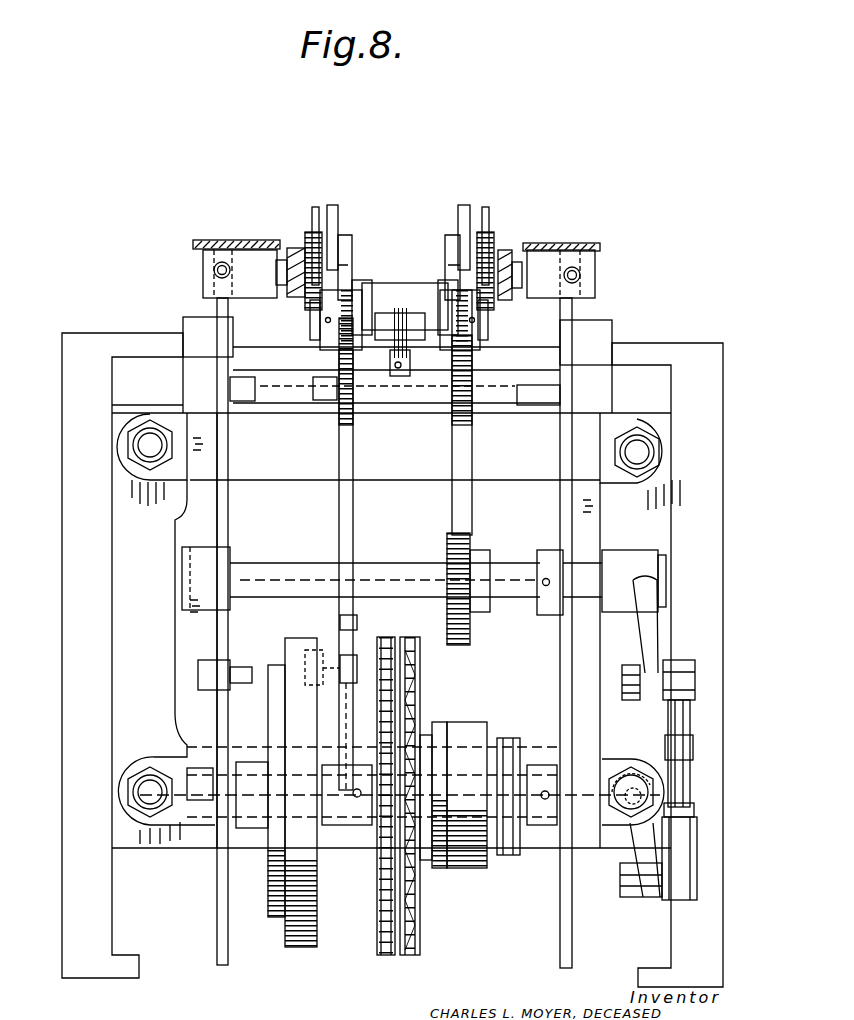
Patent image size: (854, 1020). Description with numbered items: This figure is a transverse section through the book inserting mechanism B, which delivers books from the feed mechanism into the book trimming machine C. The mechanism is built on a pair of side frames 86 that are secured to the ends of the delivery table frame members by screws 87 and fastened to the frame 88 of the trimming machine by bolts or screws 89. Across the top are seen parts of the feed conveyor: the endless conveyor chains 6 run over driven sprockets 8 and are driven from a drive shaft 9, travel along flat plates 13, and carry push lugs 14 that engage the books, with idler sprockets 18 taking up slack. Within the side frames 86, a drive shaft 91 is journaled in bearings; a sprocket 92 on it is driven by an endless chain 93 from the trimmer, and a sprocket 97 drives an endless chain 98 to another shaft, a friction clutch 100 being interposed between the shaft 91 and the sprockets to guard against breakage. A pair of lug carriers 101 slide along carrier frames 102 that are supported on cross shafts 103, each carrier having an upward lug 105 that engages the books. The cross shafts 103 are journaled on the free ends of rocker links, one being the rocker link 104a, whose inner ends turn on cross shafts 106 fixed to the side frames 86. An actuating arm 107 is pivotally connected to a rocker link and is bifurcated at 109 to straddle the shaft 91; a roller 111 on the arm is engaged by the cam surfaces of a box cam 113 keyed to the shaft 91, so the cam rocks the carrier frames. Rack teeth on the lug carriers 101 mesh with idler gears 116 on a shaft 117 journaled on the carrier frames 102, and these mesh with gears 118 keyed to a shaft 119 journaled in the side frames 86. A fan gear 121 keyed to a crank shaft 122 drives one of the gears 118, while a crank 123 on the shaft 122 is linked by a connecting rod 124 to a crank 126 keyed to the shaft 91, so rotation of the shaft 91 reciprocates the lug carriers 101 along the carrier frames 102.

The endless conveyor chains 6 is at (305, 238).
The driven sprockets 8 is at (495, 255).
The drive shaft 9 is at (322, 200).
The flat plates 13 is at (578, 248).
The push lugs 14 is at (313, 208).
The idler sprockets 18 is at (298, 248).
The side frames 86 is at (200, 528).
The screws 87 is at (215, 272).
The frame 88 is at (73, 620).
The bolts or screws 89 is at (148, 445).
The drive shaft 91 is at (516, 762).
The sprocket 92 is at (383, 880).
The endless chain 93 is at (380, 910).
The sprocket 97 is at (420, 923).
The endless chain 98 is at (420, 948).
The friction clutch 100 is at (457, 730).
The lug carriers 101 is at (345, 275).
The carrier frames 102 is at (348, 265).
The cross shafts 103 is at (395, 297).
The rocker link 104a is at (382, 395).
The lug 105 is at (338, 212).
The cross shafts 106 is at (282, 343).
The actuating arm 107 is at (356, 535).
The bifurcated end 109 is at (335, 745).
The roller 111 is at (313, 640).
The box cam 113 is at (290, 645).
The idler gears 116 is at (336, 350).
The shaft 117 is at (487, 325).
The gears 118 is at (332, 430).
The shaft 119 is at (302, 392).
The fan gear 121 is at (476, 516).
The crank shaft 122 is at (272, 572).
The crank 123 is at (650, 637).
The connecting rod 124 is at (690, 786).
The crank 126 is at (640, 840).
The book inserting mechanism B is at (640, 299).
The book trimming machine C is at (72, 345).